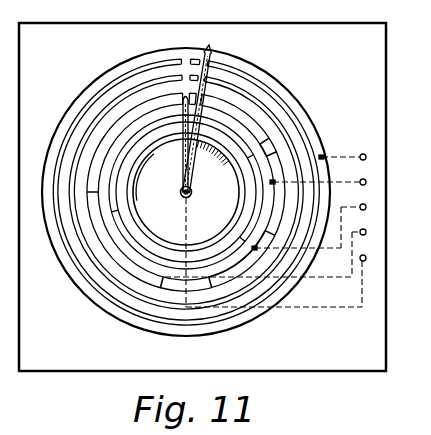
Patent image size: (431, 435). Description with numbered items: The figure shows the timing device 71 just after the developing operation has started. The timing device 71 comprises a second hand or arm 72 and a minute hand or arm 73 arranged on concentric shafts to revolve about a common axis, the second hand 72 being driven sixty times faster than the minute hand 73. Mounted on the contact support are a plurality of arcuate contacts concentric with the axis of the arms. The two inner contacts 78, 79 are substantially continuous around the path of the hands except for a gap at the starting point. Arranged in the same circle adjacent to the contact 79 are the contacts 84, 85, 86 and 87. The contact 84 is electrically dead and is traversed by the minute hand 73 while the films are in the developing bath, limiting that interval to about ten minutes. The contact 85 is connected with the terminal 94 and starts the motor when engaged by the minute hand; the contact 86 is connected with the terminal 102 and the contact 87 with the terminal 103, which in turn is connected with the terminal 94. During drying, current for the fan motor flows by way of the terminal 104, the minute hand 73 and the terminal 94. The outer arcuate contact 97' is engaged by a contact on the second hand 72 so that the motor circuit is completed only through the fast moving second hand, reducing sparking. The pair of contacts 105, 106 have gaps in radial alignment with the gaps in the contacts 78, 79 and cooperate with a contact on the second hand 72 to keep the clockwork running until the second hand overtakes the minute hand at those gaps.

The timing device 71 is at (309, 43).
The second hand or arm 72 is at (210, 57).
The minute hand or arm 73 is at (184, 95).
The inner contact 78 is at (157, 144).
The inner contact 79 is at (126, 156).
The contact 84 is at (251, 137).
The contact 85 is at (273, 206).
The contact 86 is at (228, 262).
The contact 87 is at (118, 214).
The terminal 94 is at (363, 179).
The arcuate contact 97' is at (186, 192).
The terminal 102 is at (369, 196).
The terminal 103 is at (372, 223).
The terminal 104 is at (372, 248).
The contact 105 is at (123, 85).
The contact 106 is at (102, 126).